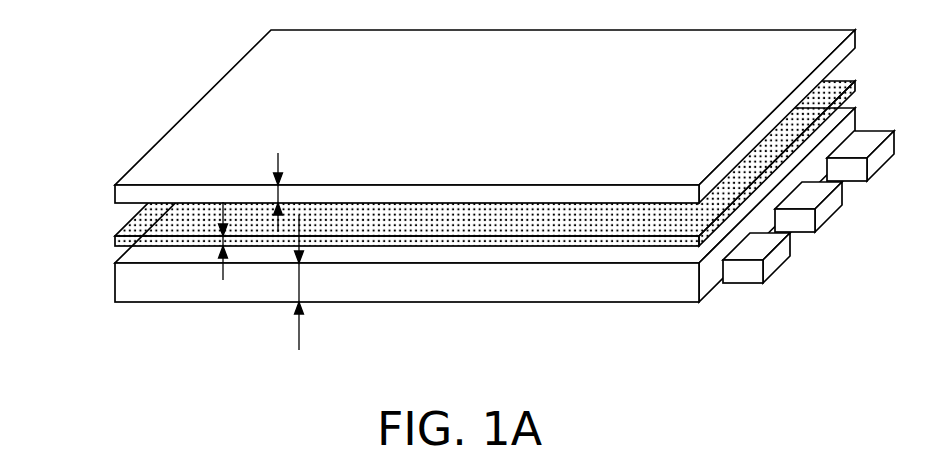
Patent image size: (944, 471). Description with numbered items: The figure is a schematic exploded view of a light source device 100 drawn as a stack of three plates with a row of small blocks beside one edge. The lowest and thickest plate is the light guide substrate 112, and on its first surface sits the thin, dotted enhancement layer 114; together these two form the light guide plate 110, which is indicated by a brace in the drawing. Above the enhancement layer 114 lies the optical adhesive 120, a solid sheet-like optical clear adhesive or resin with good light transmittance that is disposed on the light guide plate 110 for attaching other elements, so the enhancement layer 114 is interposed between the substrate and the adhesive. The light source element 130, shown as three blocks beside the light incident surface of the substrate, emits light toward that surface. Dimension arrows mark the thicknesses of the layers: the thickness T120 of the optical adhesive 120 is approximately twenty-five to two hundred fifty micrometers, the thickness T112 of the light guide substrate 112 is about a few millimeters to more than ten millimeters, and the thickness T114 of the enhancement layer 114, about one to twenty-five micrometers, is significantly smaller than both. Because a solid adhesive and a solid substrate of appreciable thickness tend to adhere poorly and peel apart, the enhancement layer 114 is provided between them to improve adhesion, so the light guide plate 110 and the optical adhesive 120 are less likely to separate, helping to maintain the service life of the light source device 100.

The light source device 100 is at (448, 202).
The light guide plate 110 is at (428, 196).
The light guide substrate 112 is at (122, 280).
The enhancement layer 114 is at (118, 242).
The optical adhesive 120 is at (123, 193).
The light source element 130 is at (757, 270).
The thickness of the optical adhesive T120 is at (277, 193).
The thickness of the enhancement layer T114 is at (222, 238).
The thickness of the light guide substrate T112 is at (298, 285).